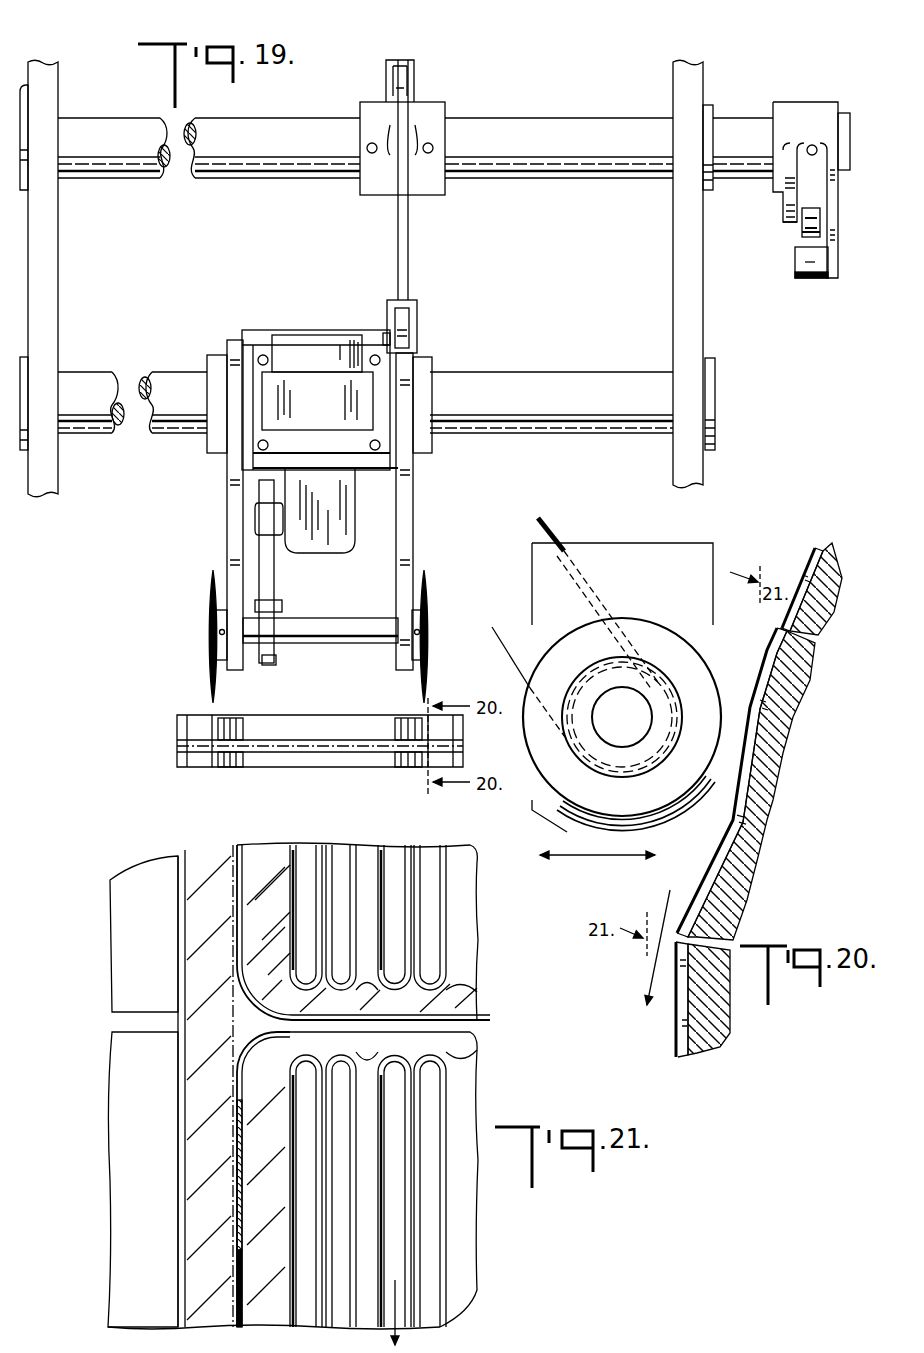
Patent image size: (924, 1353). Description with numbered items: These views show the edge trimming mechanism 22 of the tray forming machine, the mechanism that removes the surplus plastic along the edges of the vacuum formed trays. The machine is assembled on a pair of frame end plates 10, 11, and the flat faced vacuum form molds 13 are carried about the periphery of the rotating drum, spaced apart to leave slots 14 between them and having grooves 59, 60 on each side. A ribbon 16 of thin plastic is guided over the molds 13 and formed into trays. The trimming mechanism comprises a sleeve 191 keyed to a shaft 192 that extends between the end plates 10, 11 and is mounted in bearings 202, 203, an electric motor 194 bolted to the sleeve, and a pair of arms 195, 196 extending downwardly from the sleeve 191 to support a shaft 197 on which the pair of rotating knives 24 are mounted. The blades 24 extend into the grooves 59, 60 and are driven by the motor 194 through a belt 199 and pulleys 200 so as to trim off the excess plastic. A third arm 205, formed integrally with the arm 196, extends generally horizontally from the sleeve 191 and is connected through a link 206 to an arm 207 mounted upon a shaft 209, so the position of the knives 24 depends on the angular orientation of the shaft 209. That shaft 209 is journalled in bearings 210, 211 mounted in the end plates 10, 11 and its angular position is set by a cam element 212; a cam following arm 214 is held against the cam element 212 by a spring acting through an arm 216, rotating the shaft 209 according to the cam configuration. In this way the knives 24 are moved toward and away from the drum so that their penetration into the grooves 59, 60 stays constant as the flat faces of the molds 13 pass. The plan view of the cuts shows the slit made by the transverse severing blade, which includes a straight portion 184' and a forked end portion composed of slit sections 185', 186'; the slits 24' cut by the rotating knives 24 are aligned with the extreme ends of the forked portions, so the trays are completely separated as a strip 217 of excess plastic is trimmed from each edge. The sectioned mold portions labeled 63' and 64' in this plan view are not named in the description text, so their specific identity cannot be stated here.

In FIG. 19, the frame end plate 10 is at (690, 240).
In FIG. 19, the frame end plate 11 is at (50, 287).
In FIG. 19, the vacuum form mold 13 is at (190, 714).
In FIG. 20, the vacuum form mold 13 is at (842, 548).
In FIG. 21, the vacuum form mold 13 is at (112, 942).
In FIG. 19, the slot 14 is at (302, 752).
In FIG. 20, the slot 14 is at (822, 640).
In FIG. 21, the slot 14 is at (130, 1020).
In FIG. 20, the ribbon 16 is at (815, 563).
In FIG. 19, the edge trimming mechanism 22 is at (512, 106).
In FIG. 19, the rotating knife 24 is at (312, 633).
In FIG. 20, the rotating knife 24 is at (622, 700).
In FIG. 21, the rotating knife 24 is at (217, 1175).
In FIG. 20, the slit 24' is at (659, 979).
In FIG. 21, the slit 24' is at (216, 1288).
In FIG. 19, the groove 59 is at (228, 715).
In FIG. 19, the groove 60 is at (412, 715).
In FIG. 20, the groove 60 is at (806, 572).
In FIG. 21, the plate section 63' is at (357, 1078).
In FIG. 21, the ribbed member 64' is at (316, 1069).
In FIG. 21, the straight portion 184' is at (485, 993).
In FIG. 21, the slit section 185' is at (339, 932).
In FIG. 21, the slit section 186' is at (239, 1179).
In FIG. 19, the sleeve 191 is at (258, 332).
In FIG. 19, the shaft 192 is at (112, 380).
In FIG. 19, the electric motor 194 is at (325, 412).
In FIG. 19, the arm 195 is at (232, 524).
In FIG. 19, the arm 196 is at (415, 532).
In FIG. 19, the shaft 197 is at (352, 646).
In FIG. 19, the belt 199 is at (270, 580).
In FIG. 20, the belt 199 is at (560, 548).
In FIG. 19, the pulley 200 is at (258, 535).
In FIG. 19, the bearing 202 is at (24, 452).
In FIG. 19, the bearing 203 is at (716, 400).
In FIG. 19, the third arm 205 is at (410, 326).
In FIG. 19, the link 206 is at (405, 268).
In FIG. 19, the arm 207 is at (412, 112).
In FIG. 19, the shaft 209 is at (160, 180).
In FIG. 19, the bearing 210 is at (24, 95).
In FIG. 19, the bearing 211 is at (706, 112).
In FIG. 19, the cam element 212 is at (802, 228).
In FIG. 19, the cam following arm 214 is at (838, 258).
In FIG. 19, the arm 216 is at (788, 220).
In FIG. 21, the strip 217 is at (198, 966).